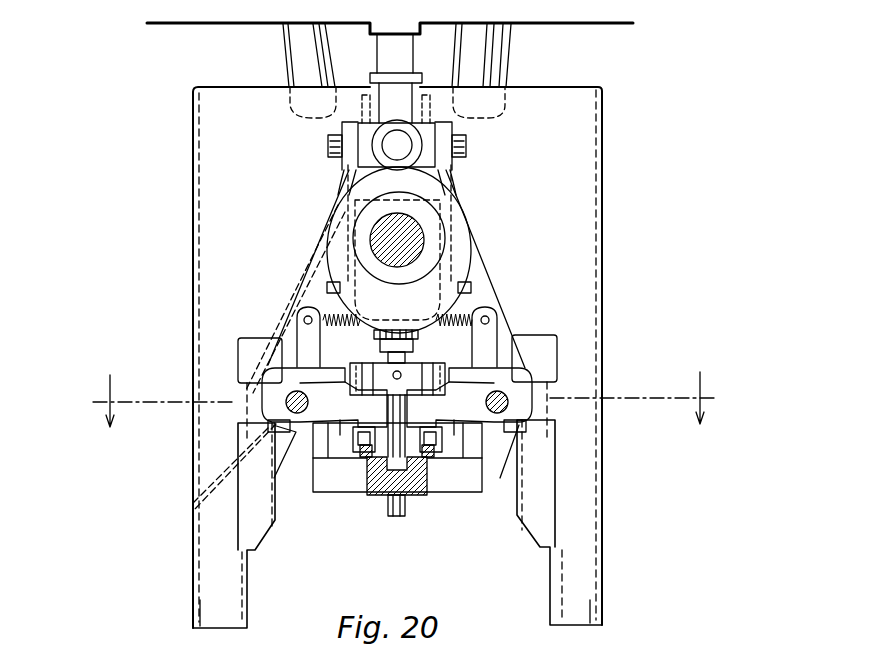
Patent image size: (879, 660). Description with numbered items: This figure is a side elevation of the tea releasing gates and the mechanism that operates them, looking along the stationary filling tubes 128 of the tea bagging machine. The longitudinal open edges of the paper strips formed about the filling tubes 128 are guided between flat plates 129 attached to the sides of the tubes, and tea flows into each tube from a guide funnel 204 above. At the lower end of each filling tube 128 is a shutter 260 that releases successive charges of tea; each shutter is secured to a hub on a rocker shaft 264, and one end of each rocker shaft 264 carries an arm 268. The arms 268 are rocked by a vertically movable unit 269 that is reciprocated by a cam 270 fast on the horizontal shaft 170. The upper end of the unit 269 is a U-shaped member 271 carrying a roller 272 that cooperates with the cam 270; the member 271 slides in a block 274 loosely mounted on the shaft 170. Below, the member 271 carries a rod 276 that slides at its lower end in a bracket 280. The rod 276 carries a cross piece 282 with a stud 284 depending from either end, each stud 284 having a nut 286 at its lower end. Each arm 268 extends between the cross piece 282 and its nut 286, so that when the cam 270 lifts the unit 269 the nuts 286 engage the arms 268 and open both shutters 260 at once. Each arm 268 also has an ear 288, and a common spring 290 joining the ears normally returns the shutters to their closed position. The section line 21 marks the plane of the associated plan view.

The guide funnel 204 is at (290, 60).
The roller 272 is at (417, 138).
The U-shaped member 271 is at (443, 176).
The horizontal shaft 170 is at (420, 222).
The cam 270 is at (460, 224).
The vertically movable unit 269 is at (525, 245).
The block 274 is at (330, 205).
The spring 290 is at (458, 322).
The ear 288 is at (298, 326).
The flat plates 129 is at (240, 348).
The cross piece 282 is at (468, 358).
The rocker shaft 264 is at (287, 403).
The section line 21— 21 is at (400, 399).
The arm 268 is at (440, 437).
The nut 286 is at (345, 425).
The shutter 260 is at (210, 482).
The filling tube 128 is at (200, 591).
The stud 284 is at (362, 450).
The bracket 280 is at (424, 493).
The rod 276 is at (397, 516).